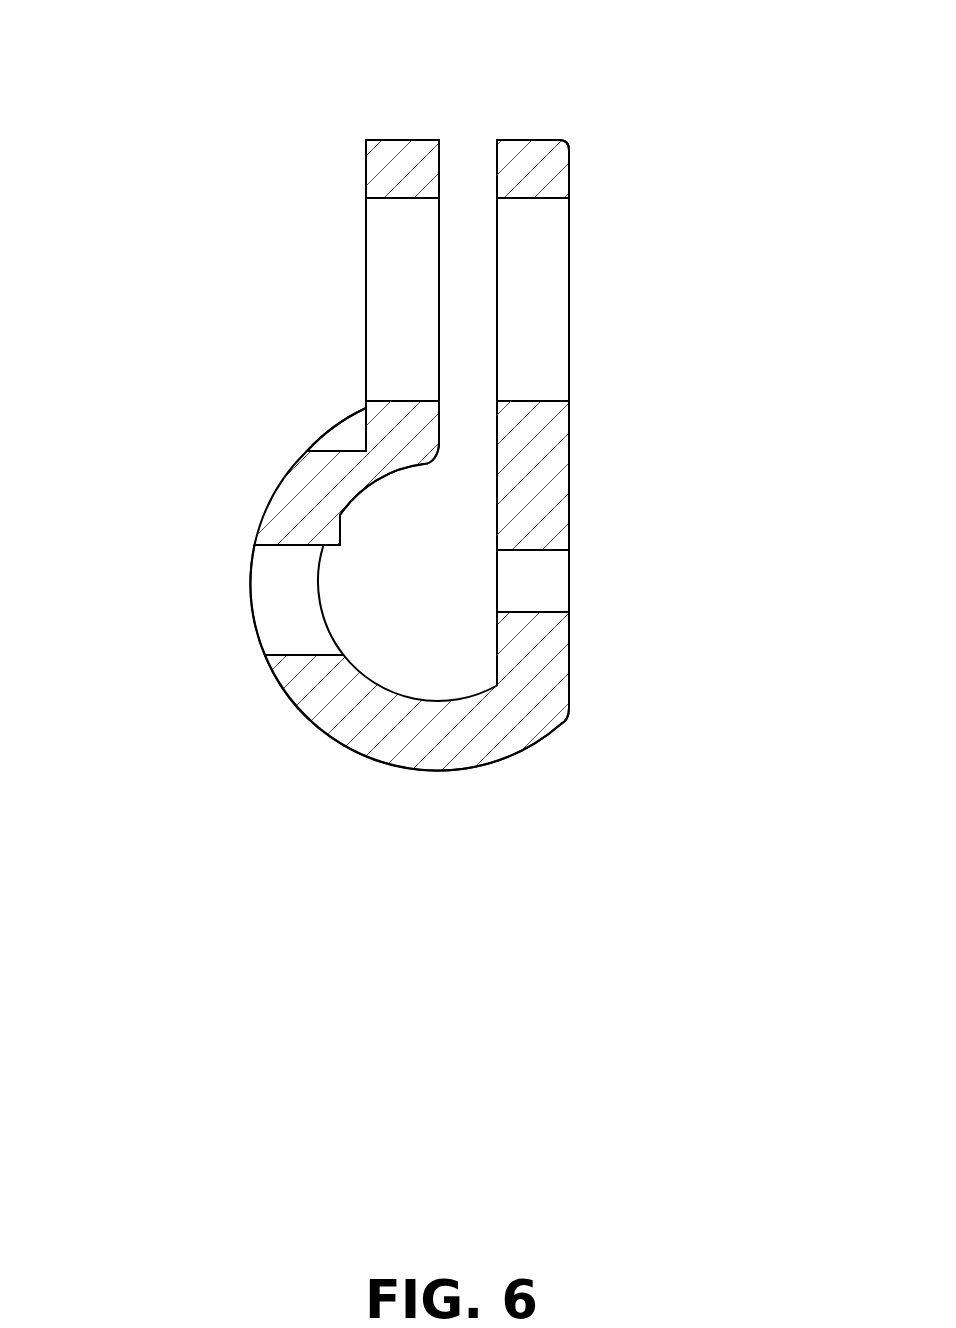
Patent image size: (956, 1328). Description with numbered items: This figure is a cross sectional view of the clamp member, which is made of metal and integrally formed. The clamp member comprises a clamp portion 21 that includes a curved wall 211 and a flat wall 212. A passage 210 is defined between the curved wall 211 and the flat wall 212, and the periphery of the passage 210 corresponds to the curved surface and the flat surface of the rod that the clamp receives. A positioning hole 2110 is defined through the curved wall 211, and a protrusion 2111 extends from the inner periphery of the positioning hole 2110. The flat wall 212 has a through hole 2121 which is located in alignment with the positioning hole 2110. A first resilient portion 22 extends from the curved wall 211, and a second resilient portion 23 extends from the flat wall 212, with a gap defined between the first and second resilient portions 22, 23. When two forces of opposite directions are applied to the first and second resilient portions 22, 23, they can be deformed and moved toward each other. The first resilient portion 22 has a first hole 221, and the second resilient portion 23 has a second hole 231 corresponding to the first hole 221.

The clamp portion 21 is at (574, 763).
The first resilient portion 22 is at (383, 167).
The second resilient portion 23 is at (542, 163).
The first hole 221 is at (390, 287).
The second hole 231 is at (552, 310).
The curved wall 211 is at (272, 518).
The flat wall 212 is at (550, 507).
The protrusion 2111 is at (339, 545).
The through hole 2121 is at (557, 593).
The positioning hole 2110 is at (288, 616).
The passage 210 is at (407, 665).